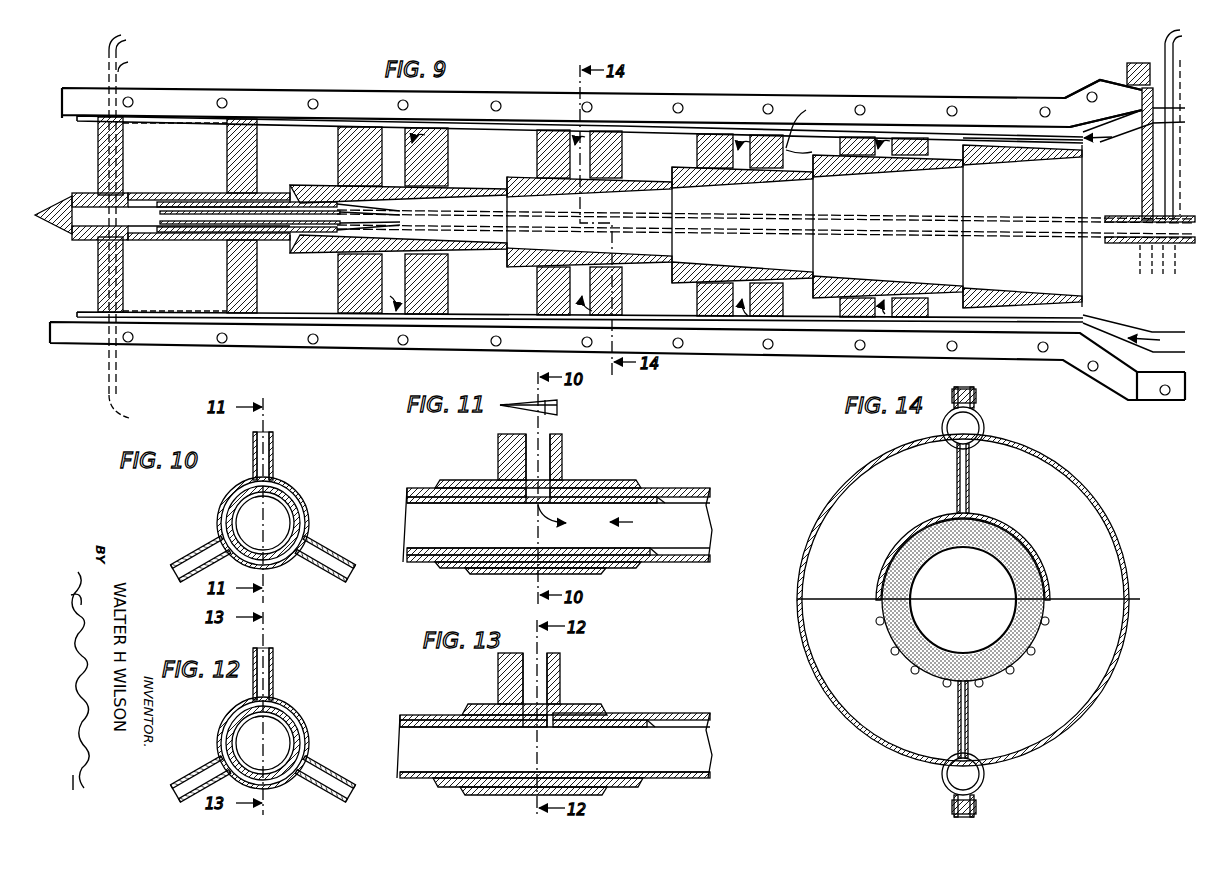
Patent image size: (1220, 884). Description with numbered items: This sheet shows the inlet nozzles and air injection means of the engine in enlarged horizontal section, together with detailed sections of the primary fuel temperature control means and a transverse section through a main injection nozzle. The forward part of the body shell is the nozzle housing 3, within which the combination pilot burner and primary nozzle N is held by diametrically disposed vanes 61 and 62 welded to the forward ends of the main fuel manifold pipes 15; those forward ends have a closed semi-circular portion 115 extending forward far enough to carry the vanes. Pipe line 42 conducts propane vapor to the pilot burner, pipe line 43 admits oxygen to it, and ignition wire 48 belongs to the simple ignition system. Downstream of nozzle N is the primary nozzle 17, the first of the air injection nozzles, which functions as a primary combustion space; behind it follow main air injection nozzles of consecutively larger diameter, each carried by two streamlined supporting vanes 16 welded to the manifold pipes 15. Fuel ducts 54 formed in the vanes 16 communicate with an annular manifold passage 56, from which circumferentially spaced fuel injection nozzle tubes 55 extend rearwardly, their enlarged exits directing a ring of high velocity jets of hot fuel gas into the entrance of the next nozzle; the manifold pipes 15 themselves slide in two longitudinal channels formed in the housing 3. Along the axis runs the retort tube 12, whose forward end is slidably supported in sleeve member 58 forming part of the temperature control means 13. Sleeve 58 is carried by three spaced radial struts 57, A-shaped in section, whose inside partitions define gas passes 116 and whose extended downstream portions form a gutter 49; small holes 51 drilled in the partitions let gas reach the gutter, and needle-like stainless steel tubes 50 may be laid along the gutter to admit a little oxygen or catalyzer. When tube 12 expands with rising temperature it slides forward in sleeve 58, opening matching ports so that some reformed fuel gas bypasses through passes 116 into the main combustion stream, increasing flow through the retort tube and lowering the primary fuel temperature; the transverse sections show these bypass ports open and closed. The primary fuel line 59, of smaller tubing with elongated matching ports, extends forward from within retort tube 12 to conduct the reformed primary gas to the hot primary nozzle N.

In FIG. 9, the nozzle housing 3 is at (1118, 92).
In FIG. 14, the nozzle housing 3 is at (1056, 468).
In FIG. 9, the retort tube 12 is at (766, 224).
In FIG. 10, the retort tube 12 is at (305, 503).
In FIG. 12, the retort tube 12 is at (307, 724).
In FIG. 11, the retort tube 12 is at (653, 490).
In FIG. 13, the retort tube 12 is at (648, 713).
In FIG. 9, the temperature control means 13 is at (1140, 213).
In FIG. 9, the main fuel manifold pipes 15 is at (991, 137).
In FIG. 14, the main fuel manifold pipes 15 is at (976, 426).
In FIG. 9, the supporting vanes 16 is at (765, 130).
In FIG. 14, the supporting vanes 16 is at (958, 716).
In FIG. 9, the primary nozzle 17 is at (325, 188).
In FIG. 9, the pipe line 42 is at (128, 72).
In FIG. 9, the pipe line 43 is at (117, 365).
In FIG. 9, the ignition wire 48 is at (120, 52).
In FIG. 11, the gutter 49 is at (560, 402).
In FIG. 9, the needle-like stainless steel tubes 50 is at (1160, 52).
In FIG. 11, the small holes 51 is at (560, 411).
In FIG. 9, the fuel ducts 54 is at (748, 160).
In FIG. 14, the fuel ducts 54 is at (957, 471).
In FIG. 9, the fuel injection nozzle tubes 55 is at (792, 128).
In FIG. 14, the fuel injection nozzle tubes 55 is at (1035, 651).
In FIG. 14, the annular manifold passage 56 is at (886, 562).
In FIG. 9, the supporting struts 57 is at (1143, 175).
In FIG. 10, the supporting struts 57 is at (320, 570).
In FIG. 12, the supporting struts 57 is at (275, 665).
In FIG. 11, the supporting struts 57 is at (530, 468).
In FIG. 13, the supporting struts 57 is at (498, 671).
In FIG. 9, the sleeve member 58 is at (1132, 248).
In FIG. 10, the sleeve member 58 is at (292, 482).
In FIG. 12, the sleeve member 58 is at (295, 705).
In FIG. 11, the sleeve member 58 is at (476, 480).
In FIG. 13, the sleeve member 58 is at (578, 704).
In FIG. 9, the primary fuel line 59 is at (1003, 222).
In FIG. 10, the primary fuel line 59 is at (300, 525).
In FIG. 12, the primary fuel line 59 is at (302, 746).
In FIG. 11, the primary fuel line 59 is at (424, 488).
In FIG. 13, the primary fuel line 59 is at (413, 715).
In FIG. 9, the vane 61 is at (124, 262).
In FIG. 9, the vane 62 is at (227, 278).
In FIG. 9, the closed semi-circular portion 115 is at (150, 128).
In FIG. 11, the gas passes 116 is at (530, 404).
In FIG. 9, the primary nozzle N is at (196, 195).